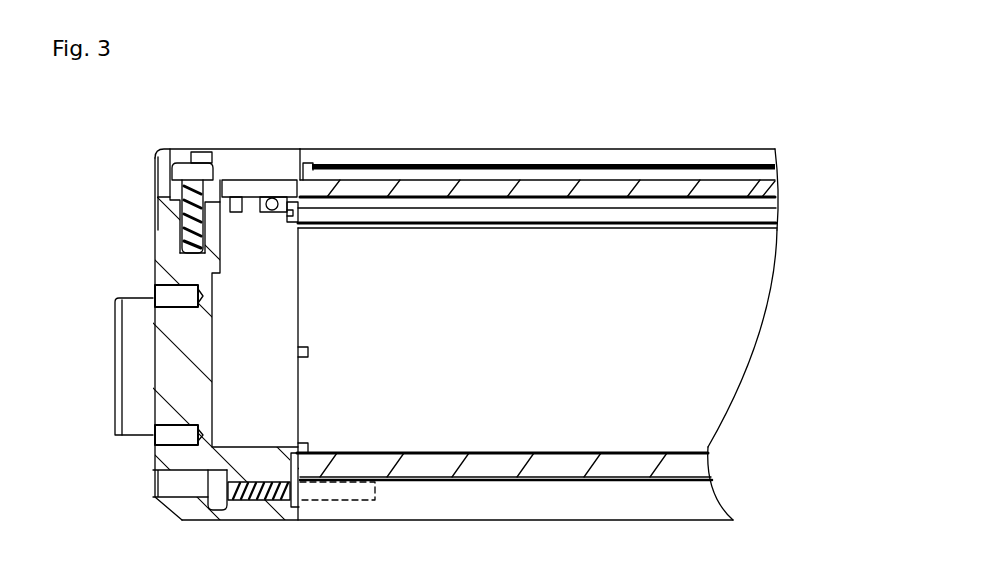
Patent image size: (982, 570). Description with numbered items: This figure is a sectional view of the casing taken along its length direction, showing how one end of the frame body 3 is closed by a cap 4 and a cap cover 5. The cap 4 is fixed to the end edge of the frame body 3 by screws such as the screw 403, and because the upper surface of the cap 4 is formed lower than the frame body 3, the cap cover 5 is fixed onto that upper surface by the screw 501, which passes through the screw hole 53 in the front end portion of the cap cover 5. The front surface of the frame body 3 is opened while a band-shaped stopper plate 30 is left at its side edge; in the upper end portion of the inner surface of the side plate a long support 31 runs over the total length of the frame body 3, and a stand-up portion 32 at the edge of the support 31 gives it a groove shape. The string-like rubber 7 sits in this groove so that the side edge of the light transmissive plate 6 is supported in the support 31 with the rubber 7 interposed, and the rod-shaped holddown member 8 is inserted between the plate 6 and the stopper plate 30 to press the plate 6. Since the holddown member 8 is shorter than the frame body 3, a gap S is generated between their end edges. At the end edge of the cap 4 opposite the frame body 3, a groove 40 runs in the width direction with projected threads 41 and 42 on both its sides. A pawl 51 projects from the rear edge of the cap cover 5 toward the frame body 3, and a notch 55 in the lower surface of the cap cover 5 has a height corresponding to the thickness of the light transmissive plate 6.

The frame body 3 is at (516, 513).
The cap 4 is at (152, 457).
The cap cover 5 is at (248, 185).
The light transmissive plate 6 is at (509, 190).
The string-like rubber 7 is at (125, 299).
The holddown member 8 is at (466, 178).
The stopper plate 30 is at (668, 157).
The support 31 is at (774, 184).
The stand-up portion 32 is at (770, 208).
The groove 40 is at (290, 200).
The projected thread 41 is at (125, 299).
The projected thread 42 is at (258, 208).
The pawl 51 is at (333, 163).
The screw hole 53 is at (170, 209).
The notch 55 is at (222, 186).
The screw 403 is at (222, 511).
The screw 501 is at (190, 165).
The gap S is at (313, 168).